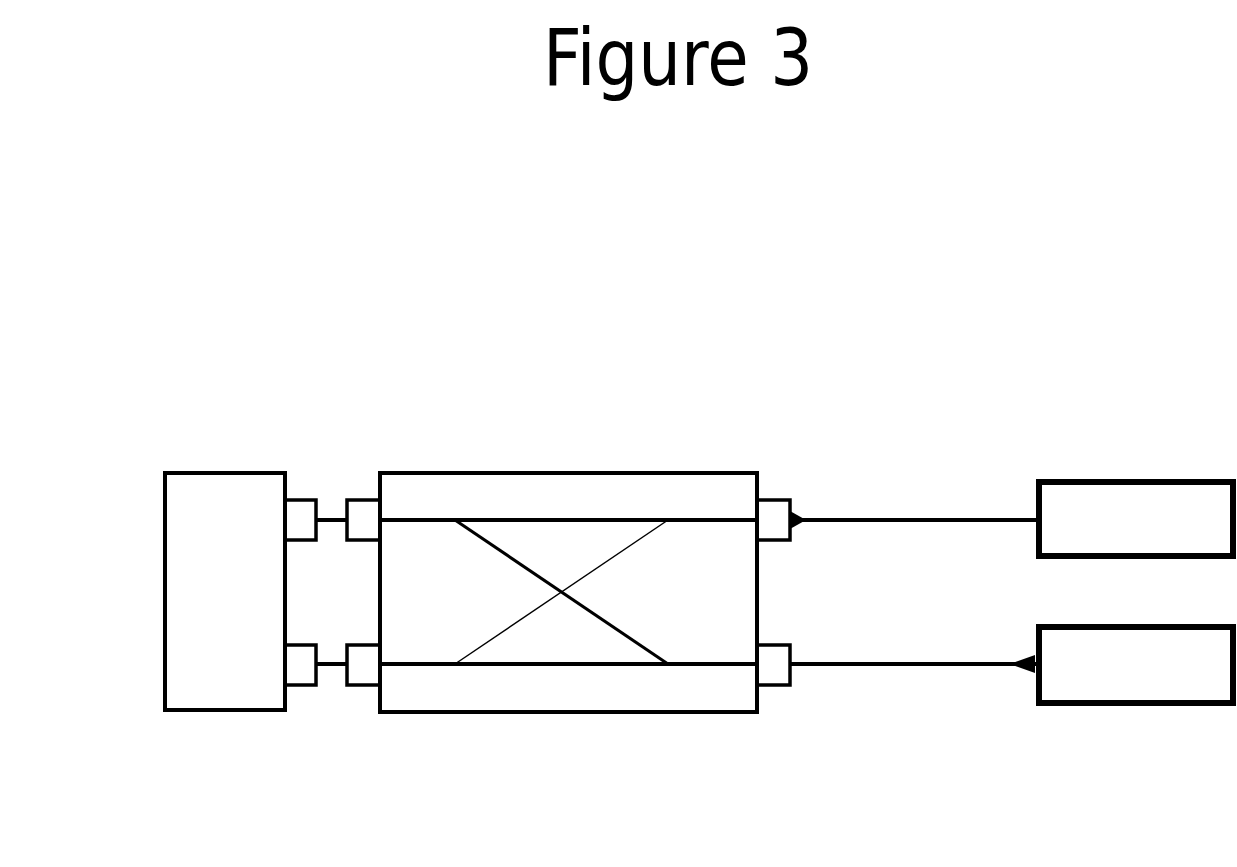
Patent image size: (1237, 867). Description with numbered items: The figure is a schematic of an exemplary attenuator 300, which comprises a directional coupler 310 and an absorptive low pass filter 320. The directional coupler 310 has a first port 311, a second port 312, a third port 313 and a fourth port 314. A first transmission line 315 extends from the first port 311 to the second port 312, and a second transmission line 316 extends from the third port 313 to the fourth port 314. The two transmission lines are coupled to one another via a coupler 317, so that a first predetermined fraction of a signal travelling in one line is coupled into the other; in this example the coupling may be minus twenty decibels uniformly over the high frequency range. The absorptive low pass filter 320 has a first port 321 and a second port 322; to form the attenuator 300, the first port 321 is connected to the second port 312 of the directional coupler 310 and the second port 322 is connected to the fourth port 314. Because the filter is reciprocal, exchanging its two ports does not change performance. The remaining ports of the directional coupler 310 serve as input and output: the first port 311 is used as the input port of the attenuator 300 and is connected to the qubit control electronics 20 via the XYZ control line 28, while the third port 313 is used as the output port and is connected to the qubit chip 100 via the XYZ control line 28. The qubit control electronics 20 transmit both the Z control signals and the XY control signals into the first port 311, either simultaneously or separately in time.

The attenuator 300 is at (405, 400).
The directional coupler 310 is at (575, 470).
The first port 311 is at (773, 500).
The second port 312 is at (353, 500).
The third port 313 is at (773, 645).
The fourth port 314 is at (361, 645).
The first transmission line 315 is at (423, 517).
The second transmission line 316 is at (426, 669).
The coupler 317 is at (577, 596).
The absorptive low pass filter 320 is at (216, 470).
The first port 321 is at (279, 523).
The second port 322 is at (279, 665).
The XYZ control line 28 is at (906, 518).
The qubit control electronics 20 is at (1149, 480).
The qubit chip 100 is at (1149, 625).